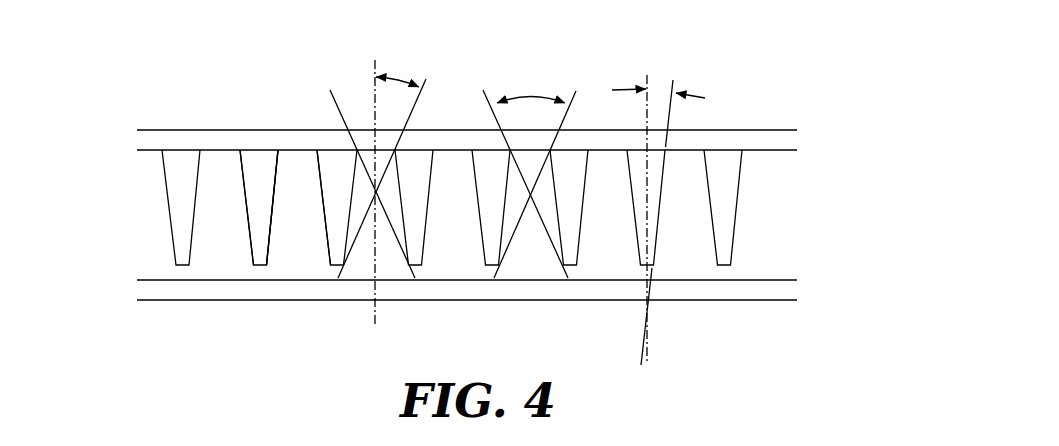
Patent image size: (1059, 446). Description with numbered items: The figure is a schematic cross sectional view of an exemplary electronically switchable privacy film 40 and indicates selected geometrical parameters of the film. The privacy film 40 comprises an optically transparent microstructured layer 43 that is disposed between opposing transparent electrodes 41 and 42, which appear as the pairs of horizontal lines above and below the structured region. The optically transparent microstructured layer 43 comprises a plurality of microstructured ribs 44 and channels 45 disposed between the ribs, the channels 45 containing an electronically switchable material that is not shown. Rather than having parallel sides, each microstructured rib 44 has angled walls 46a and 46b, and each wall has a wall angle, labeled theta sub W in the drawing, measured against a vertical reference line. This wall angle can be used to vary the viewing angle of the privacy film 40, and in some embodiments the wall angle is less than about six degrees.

The privacy film 40 is at (720, 32).
The transparent electrode 41 is at (180, 135).
The transparent electrode 42 is at (157, 290).
The optically transparent microstructured layer 43 is at (125, 143).
The microstructured rib 44 is at (297, 165).
The channel 45 is at (253, 165).
The angled wall 46a is at (248, 232).
The angled wall 46b is at (272, 217).